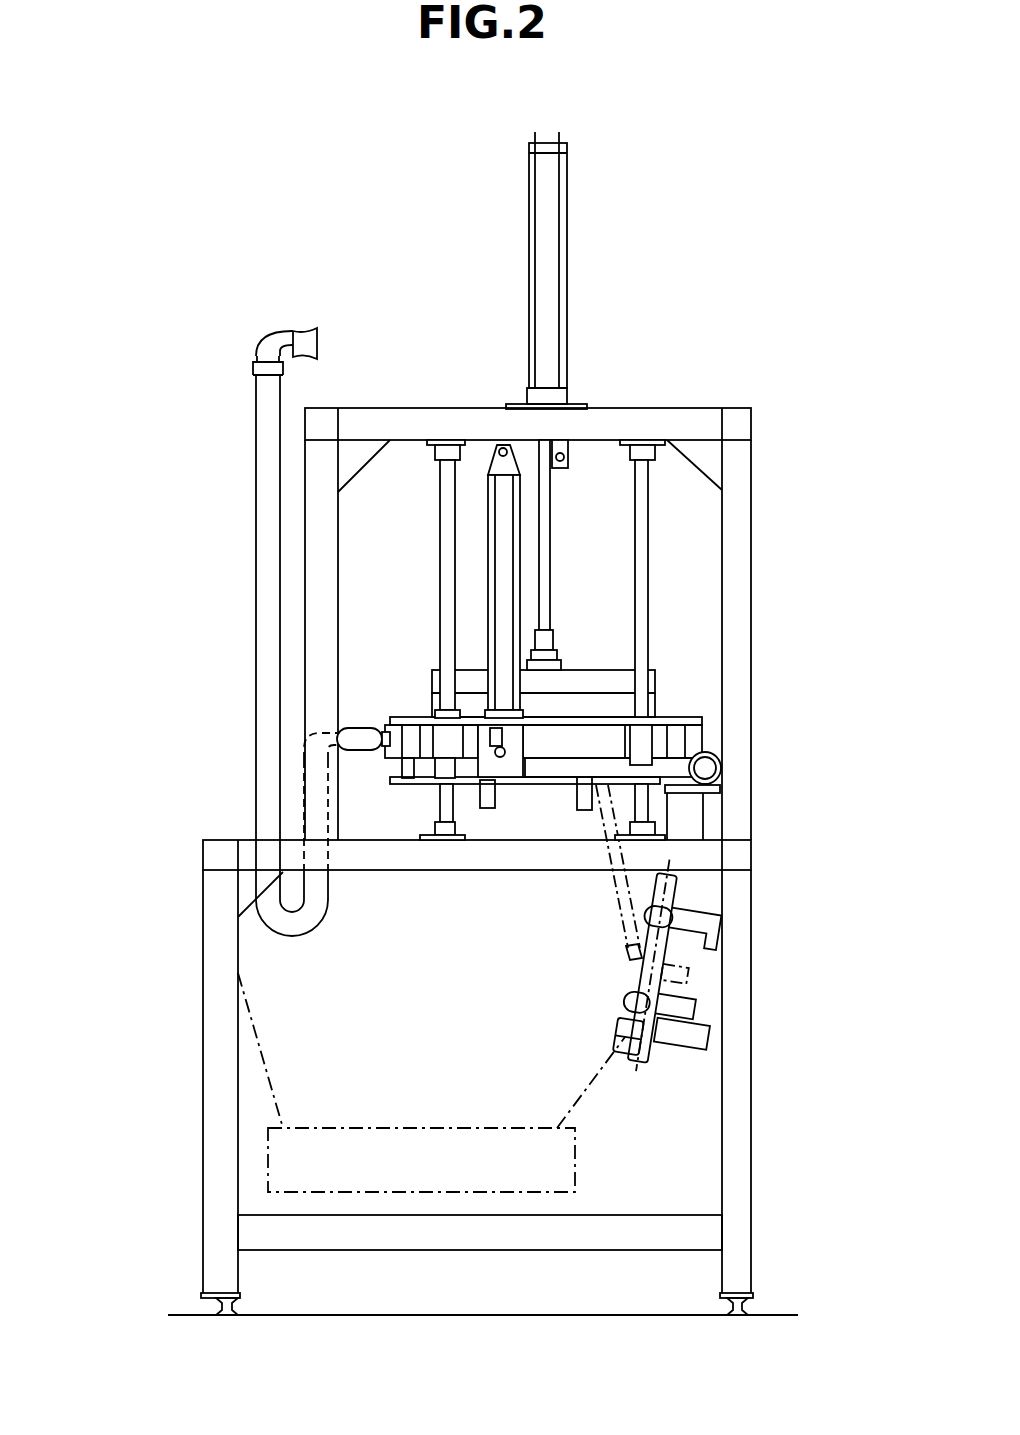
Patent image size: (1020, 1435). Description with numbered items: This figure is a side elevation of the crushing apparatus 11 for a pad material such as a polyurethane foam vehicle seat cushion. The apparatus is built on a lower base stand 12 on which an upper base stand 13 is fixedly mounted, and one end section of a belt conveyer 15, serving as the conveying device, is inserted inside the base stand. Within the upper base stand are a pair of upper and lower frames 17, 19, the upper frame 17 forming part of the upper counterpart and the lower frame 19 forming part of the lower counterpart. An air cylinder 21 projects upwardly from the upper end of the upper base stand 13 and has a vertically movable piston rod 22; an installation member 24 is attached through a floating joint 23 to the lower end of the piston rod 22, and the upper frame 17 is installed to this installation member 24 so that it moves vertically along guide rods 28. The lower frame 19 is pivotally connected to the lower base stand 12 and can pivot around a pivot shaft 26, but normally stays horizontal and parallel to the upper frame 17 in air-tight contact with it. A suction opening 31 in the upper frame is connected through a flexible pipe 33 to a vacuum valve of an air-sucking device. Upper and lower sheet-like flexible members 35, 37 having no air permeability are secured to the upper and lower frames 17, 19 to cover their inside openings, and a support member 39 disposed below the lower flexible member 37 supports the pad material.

The crushing apparatus 11 is at (385, 350).
The lower base stand 12 is at (203, 960).
The upper base stand 13 is at (680, 408).
The belt conveyer 15 is at (298, 1163).
The upper frame 17 is at (703, 738).
The lower frame 19 is at (512, 783).
The air cylinder 21 is at (567, 243).
The piston rod 22 is at (553, 538).
The floating joint 23 is at (553, 650).
The installation member 24 is at (613, 680).
The pivot shaft 26 is at (712, 776).
The guide rods 28 is at (443, 557).
The suction opening 31 is at (380, 727).
The flexible pipe 33 is at (256, 770).
The upper sheet-like flexible member 35 is at (547, 783).
The lower sheet-like flexible member 37 is at (563, 783).
The support member 39 is at (412, 783).